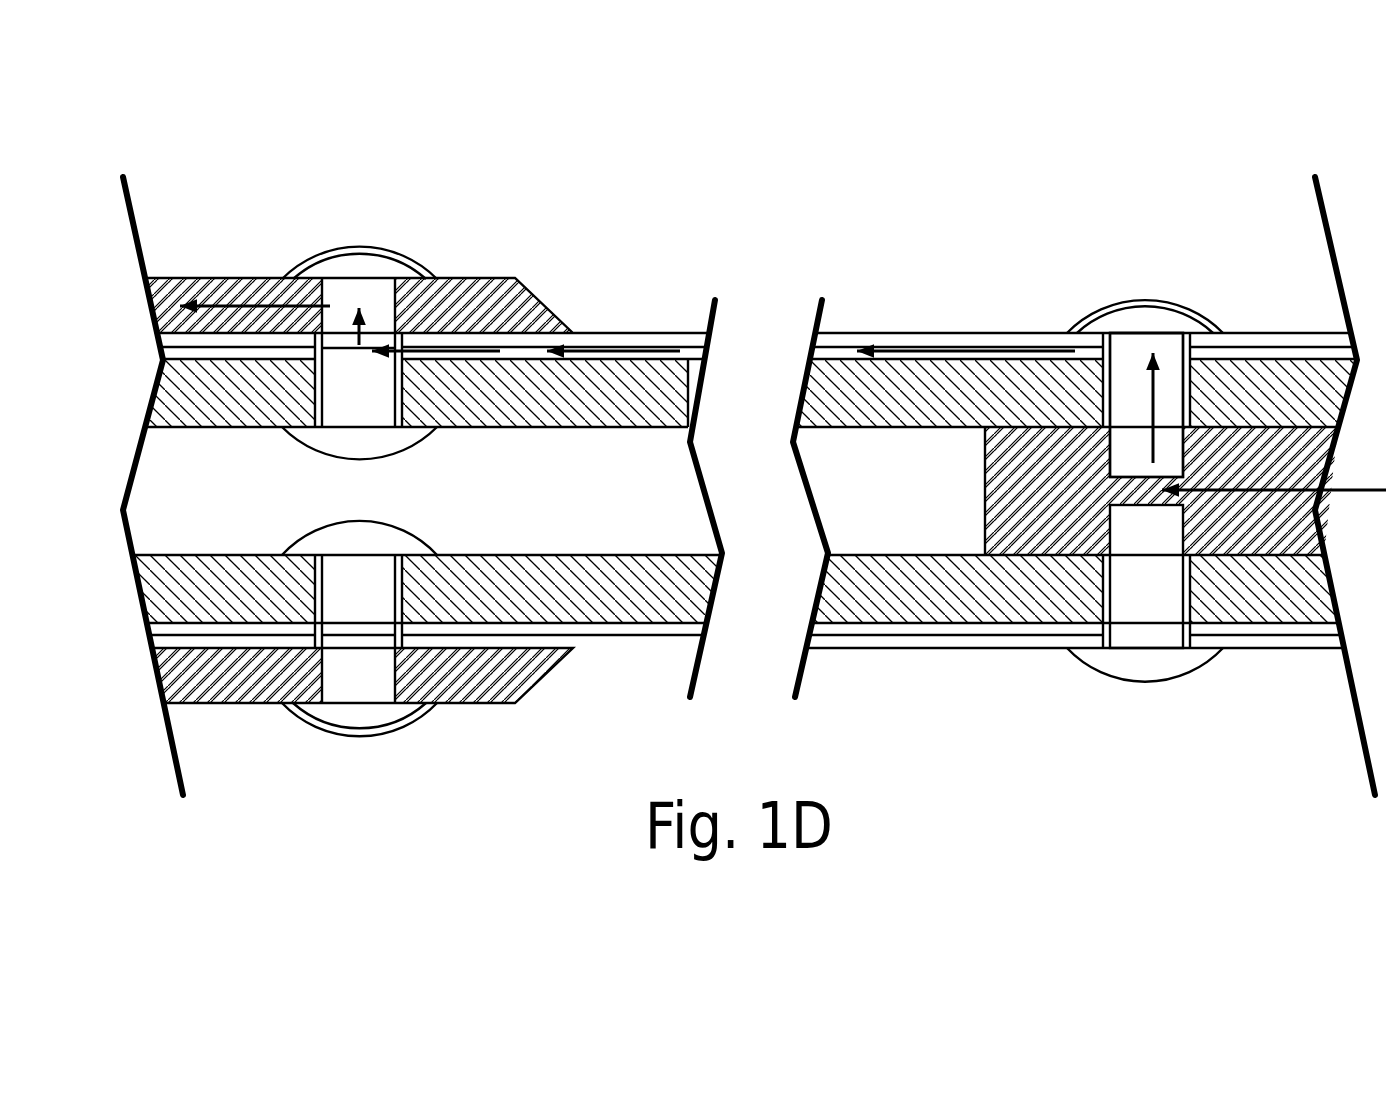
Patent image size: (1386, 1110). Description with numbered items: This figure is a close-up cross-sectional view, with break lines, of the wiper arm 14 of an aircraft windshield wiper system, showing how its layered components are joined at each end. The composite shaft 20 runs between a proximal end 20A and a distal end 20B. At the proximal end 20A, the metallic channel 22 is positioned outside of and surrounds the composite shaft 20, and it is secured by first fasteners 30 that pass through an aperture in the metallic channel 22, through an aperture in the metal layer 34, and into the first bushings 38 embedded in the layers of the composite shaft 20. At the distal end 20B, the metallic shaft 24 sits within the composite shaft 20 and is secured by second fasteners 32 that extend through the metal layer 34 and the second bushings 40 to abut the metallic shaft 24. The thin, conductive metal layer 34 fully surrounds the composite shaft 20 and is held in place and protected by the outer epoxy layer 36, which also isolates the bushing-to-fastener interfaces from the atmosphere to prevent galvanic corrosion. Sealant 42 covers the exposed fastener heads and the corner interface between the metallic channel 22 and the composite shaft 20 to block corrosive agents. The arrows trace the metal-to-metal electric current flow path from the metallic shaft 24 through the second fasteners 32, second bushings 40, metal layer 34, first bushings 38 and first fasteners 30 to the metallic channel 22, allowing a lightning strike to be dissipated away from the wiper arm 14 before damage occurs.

The wiper arm 14 is at (765, 233).
The proximal end of composite shaft 20A is at (207, 247).
The distal end of composite shaft 20B is at (1275, 297).
The composite shaft 20 is at (563, 602).
The metallic channel 22 is at (225, 672).
The metallic shaft 24 is at (1237, 535).
The first fasteners 30 is at (377, 270).
The second fasteners 32 is at (1137, 325).
The metal layer 34 is at (638, 630).
The epoxy layer 36 is at (847, 645).
The first bushings 38 is at (360, 396).
The second bushings 40 is at (1128, 395).
The sealant 42 is at (374, 248).